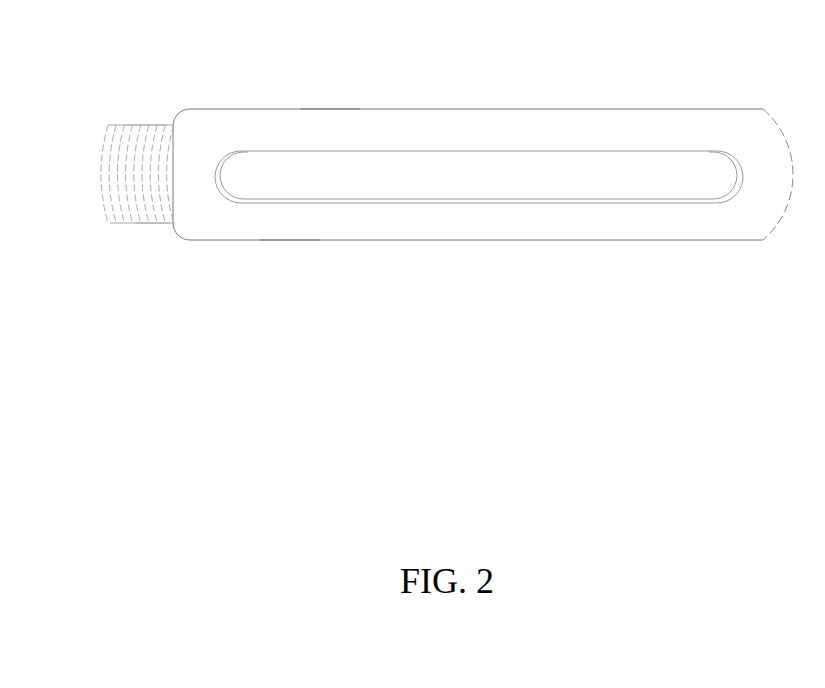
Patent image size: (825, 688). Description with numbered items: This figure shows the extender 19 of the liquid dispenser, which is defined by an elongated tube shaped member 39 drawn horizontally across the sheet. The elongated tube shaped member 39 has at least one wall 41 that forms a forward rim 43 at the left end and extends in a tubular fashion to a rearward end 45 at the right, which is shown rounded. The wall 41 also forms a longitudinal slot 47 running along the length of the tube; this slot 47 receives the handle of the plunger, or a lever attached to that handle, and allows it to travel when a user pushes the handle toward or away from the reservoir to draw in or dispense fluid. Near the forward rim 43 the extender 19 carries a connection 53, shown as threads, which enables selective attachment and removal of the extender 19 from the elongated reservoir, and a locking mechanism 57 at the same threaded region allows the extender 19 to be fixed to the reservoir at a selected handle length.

The extender 19 is at (496, 160).
The elongated tube shaped member 39 is at (328, 109).
The wall 41 is at (288, 227).
The forward rim 43 is at (107, 132).
The rearward end 45 is at (783, 122).
The longitudinal slot 47 is at (535, 178).
The connection 53 is at (145, 118).
The locking mechanism 57 is at (157, 225).